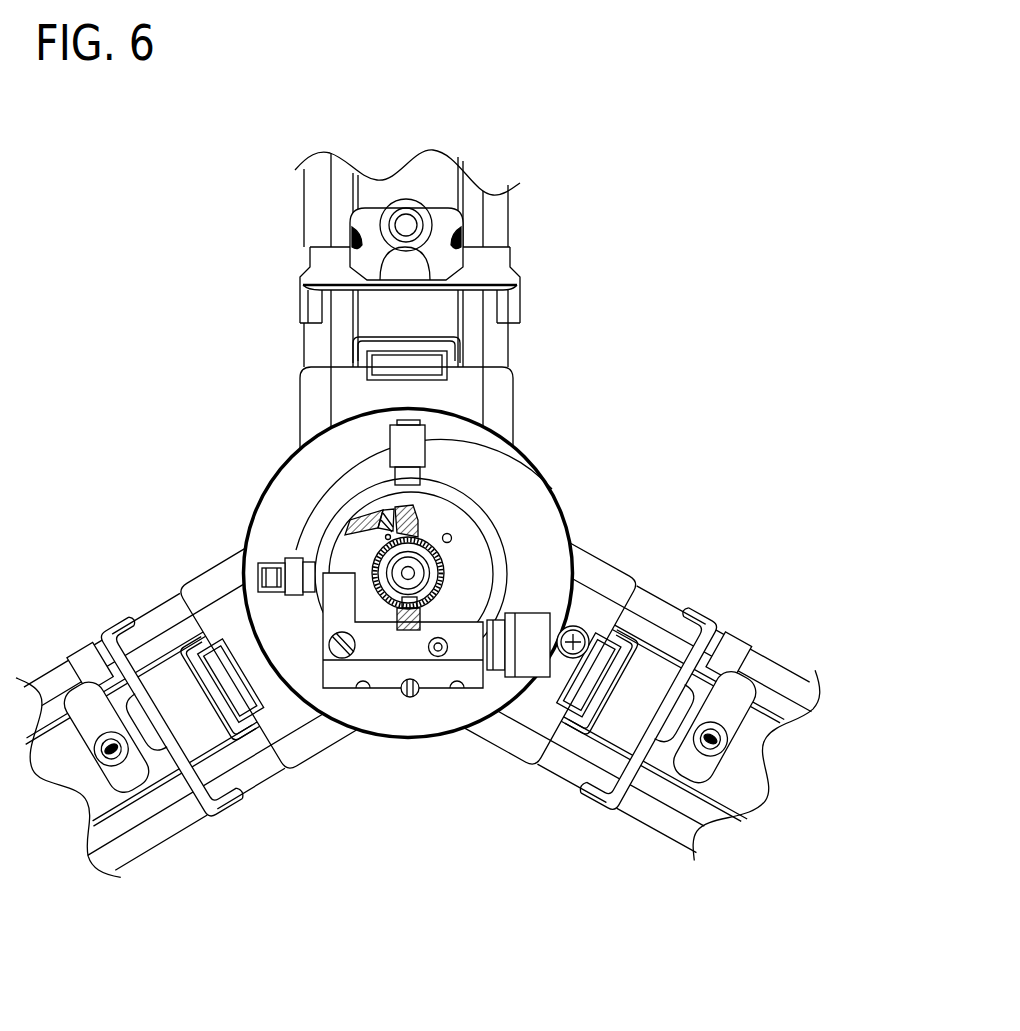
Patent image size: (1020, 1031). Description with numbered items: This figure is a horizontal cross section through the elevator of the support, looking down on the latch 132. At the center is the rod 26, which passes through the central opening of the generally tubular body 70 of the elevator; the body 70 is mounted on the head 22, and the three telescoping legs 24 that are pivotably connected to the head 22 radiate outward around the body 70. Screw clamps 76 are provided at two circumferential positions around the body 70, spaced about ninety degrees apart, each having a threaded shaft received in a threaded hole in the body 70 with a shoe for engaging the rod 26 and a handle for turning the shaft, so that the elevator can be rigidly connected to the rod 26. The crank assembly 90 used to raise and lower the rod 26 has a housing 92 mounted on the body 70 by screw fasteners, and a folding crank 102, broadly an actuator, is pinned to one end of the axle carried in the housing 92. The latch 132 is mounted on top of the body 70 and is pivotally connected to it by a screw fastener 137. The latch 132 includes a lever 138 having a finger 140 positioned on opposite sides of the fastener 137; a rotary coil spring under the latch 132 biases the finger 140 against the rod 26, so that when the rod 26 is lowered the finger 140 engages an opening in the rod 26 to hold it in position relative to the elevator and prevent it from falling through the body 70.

The telescoping legs 24 is at (514, 226).
The head 22 is at (575, 510).
The tubular body 70 is at (573, 562).
The rod 26 is at (368, 563).
The screw clamps 76 is at (434, 448).
The crank assembly 90 is at (392, 702).
The housing 92 is at (455, 692).
The crank 102 is at (534, 680).
The latch 132 is at (424, 511).
The screw fastener 137 is at (386, 510).
The lever 138 is at (360, 556).
The finger 140 is at (453, 530).